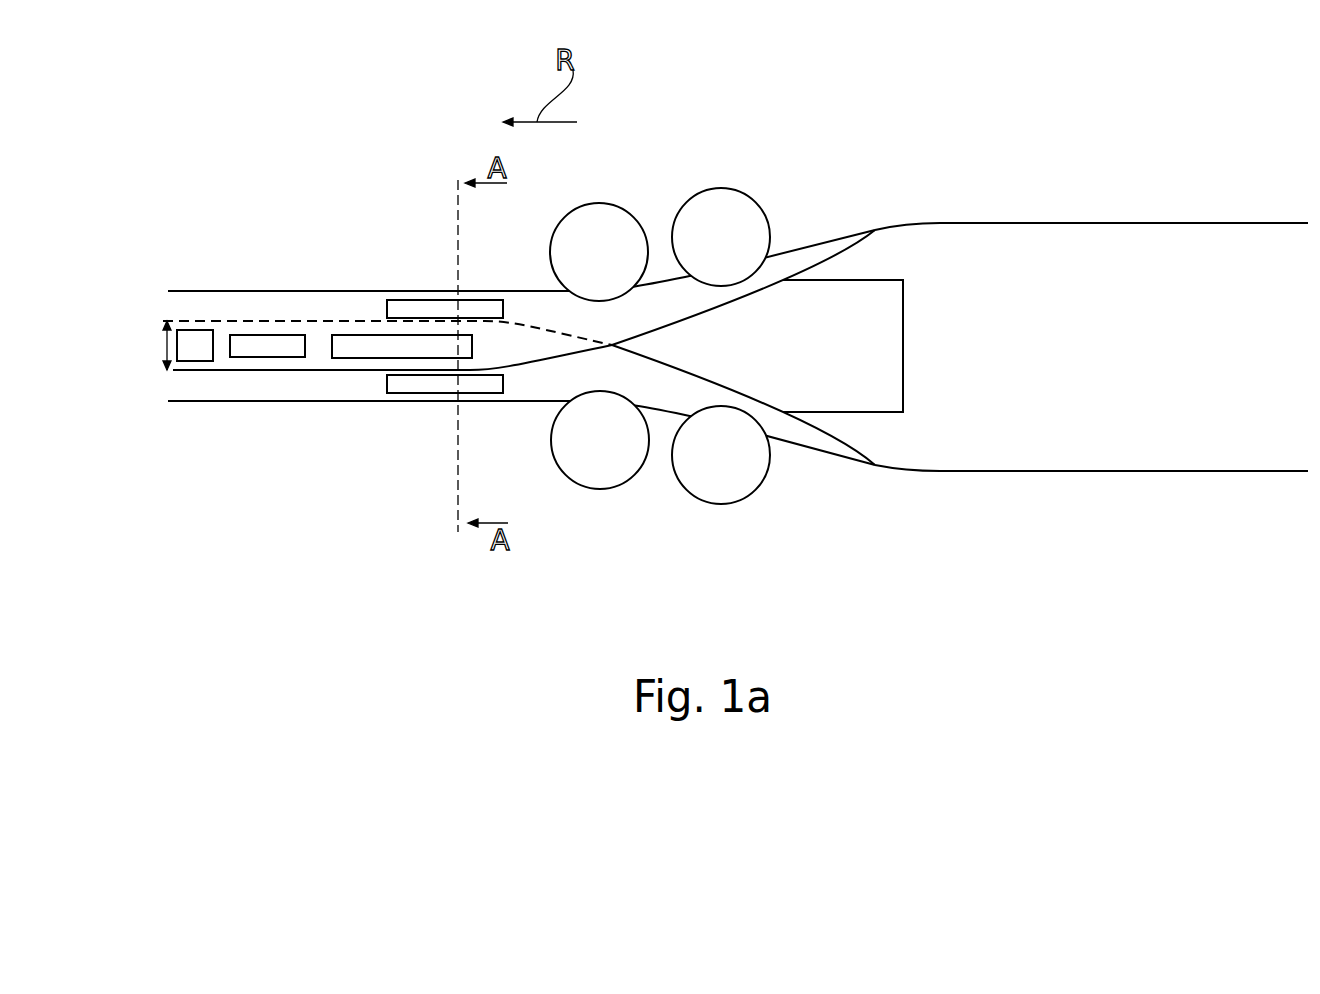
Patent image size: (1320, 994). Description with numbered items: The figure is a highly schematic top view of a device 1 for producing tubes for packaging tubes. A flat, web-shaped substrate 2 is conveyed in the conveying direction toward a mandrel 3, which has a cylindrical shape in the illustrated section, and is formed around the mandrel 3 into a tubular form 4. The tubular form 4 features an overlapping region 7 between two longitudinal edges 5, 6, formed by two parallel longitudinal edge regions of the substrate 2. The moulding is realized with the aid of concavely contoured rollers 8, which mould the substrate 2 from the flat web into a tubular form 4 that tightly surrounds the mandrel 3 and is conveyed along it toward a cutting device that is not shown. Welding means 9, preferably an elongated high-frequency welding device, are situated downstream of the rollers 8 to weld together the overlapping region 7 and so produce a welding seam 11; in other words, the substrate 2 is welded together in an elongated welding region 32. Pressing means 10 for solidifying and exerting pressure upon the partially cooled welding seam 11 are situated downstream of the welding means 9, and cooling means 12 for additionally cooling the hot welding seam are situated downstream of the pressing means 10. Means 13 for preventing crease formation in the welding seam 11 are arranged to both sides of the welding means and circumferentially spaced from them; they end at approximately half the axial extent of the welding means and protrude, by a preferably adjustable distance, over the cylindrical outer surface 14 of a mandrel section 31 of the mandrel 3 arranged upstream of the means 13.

The device 1 is at (1036, 97).
The substrate 2 is at (1165, 238).
The mandrel 3 is at (878, 347).
The tubular form 4 is at (426, 294).
The longitudinal edge 5 is at (991, 471).
The longitudinal edge 6 is at (1077, 220).
The overlapping region 7 is at (222, 349).
The concavely contoured rollers 8 is at (600, 203).
The welding means 9 is at (378, 345).
The pressing means 10 is at (257, 342).
The welding seam 11 is at (297, 327).
The cooling means 12 is at (203, 342).
The means for preventing crease formation 13 is at (397, 305).
The cylindrical outer surface 14 is at (793, 328).
The mandrel section 31 is at (832, 385).
The welding region 32 is at (325, 348).